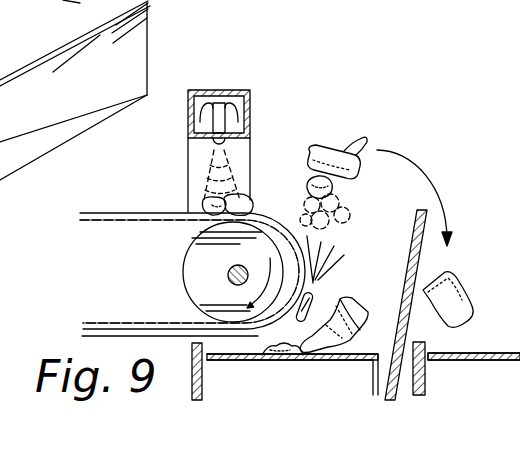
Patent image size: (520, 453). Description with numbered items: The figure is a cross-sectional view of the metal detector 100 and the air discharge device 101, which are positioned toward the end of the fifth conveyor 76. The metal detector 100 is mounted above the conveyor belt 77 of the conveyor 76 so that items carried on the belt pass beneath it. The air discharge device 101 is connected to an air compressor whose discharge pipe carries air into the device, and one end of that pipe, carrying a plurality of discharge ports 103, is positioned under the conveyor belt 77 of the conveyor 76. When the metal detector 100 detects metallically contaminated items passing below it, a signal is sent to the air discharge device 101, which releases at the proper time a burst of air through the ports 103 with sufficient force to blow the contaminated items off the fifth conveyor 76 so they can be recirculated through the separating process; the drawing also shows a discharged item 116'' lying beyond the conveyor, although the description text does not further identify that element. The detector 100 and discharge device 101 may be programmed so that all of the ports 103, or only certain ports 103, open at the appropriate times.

The metal detector 100 is at (263, 74).
The fifth conveyor 76 is at (166, 191).
The conveyor belt 77 is at (135, 220).
The air discharge device 101 is at (330, 280).
The discharge ports 103 is at (311, 306).
The rejected cork 116'' is at (325, 347).